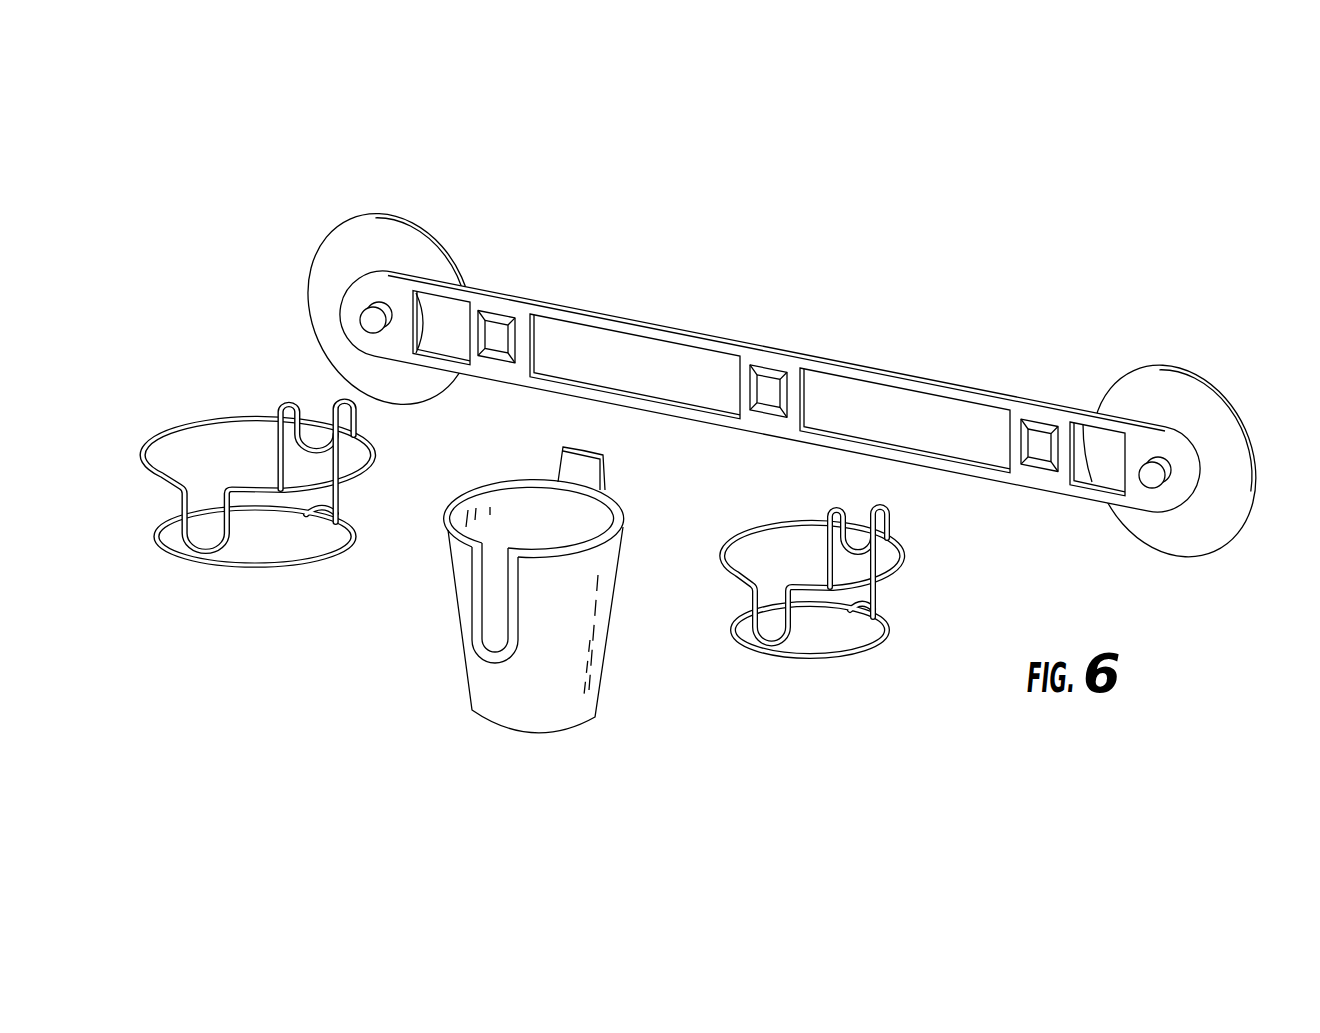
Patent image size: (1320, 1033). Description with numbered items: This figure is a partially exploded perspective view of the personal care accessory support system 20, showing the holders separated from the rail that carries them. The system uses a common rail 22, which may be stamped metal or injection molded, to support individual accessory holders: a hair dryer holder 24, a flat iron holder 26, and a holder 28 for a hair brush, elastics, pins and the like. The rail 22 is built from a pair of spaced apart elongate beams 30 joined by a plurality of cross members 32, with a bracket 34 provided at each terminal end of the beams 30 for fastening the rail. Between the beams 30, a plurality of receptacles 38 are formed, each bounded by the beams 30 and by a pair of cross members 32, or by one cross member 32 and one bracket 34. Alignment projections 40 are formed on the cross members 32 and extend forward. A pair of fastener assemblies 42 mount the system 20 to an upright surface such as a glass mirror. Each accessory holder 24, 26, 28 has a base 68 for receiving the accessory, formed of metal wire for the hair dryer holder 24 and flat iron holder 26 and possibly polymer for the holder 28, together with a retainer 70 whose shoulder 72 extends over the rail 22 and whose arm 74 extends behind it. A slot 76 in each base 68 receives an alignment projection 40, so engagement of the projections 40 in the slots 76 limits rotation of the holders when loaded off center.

The personal care accessory support system 20 is at (975, 170).
The rail 22 is at (623, 323).
The hair dryer holder 24 is at (231, 563).
The flat iron holder 26 is at (833, 660).
The holder 28 is at (506, 716).
The elongate beams 30 is at (562, 312).
The cross members 32 is at (1016, 432).
The bracket 34 is at (1170, 440).
The receptacles 38 is at (838, 430).
The alignment projections 40 is at (767, 390).
The fastener assemblies 42 is at (1162, 471).
The base 68 is at (781, 583).
The retainer 70 is at (827, 525).
The shoulder 72 is at (861, 525).
The arm 74 is at (921, 562).
The slot 76 is at (850, 537).